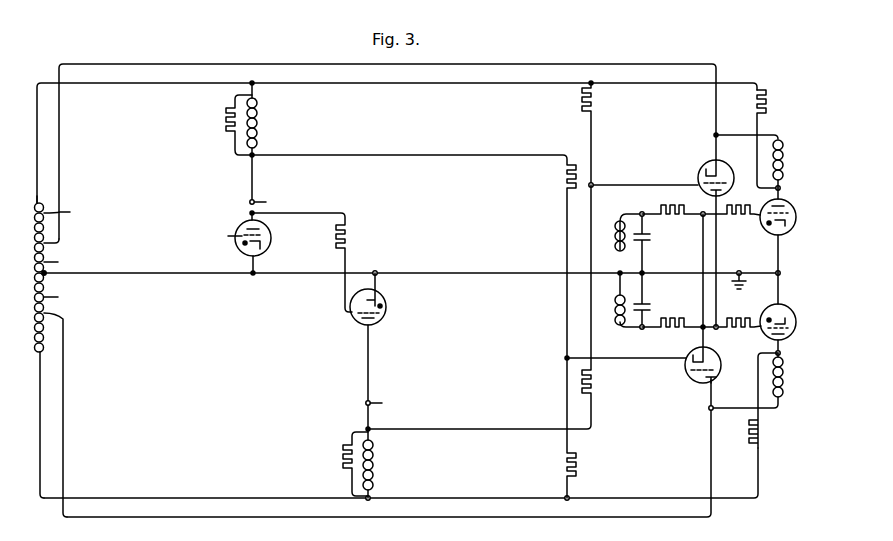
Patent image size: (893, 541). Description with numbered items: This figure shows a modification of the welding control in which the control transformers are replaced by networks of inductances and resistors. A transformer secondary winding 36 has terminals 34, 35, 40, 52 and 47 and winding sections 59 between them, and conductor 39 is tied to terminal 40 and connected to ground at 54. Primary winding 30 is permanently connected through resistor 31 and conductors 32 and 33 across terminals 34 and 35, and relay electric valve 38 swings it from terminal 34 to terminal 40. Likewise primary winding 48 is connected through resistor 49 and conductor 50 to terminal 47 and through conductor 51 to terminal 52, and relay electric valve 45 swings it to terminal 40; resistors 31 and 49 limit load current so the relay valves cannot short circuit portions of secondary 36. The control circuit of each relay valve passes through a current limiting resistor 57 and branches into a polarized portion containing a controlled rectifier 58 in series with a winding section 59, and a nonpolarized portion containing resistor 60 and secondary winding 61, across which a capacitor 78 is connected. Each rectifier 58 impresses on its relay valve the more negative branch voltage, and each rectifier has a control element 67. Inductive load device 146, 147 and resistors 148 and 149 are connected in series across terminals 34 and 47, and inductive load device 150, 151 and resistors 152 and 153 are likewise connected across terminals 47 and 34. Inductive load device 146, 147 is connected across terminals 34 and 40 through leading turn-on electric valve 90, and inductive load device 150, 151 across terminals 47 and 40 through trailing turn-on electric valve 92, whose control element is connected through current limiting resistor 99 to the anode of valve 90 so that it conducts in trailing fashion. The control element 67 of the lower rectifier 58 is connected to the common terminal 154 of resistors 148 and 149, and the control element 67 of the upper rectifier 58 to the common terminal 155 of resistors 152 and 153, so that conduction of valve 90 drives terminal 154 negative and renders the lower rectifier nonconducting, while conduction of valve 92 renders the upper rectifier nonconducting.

The conductor 33 is at (195, 63).
The conductor 32 is at (173, 84).
The terminal of secondary winding 34 is at (36, 201).
The secondary winding 36 is at (68, 213).
The terminal of secondary winding 35 is at (60, 246).
The winding sections 59 is at (63, 281).
The terminal of secondary winding 40 is at (48, 277).
The terminal of secondary winding 52 is at (63, 321).
The terminal of secondary winding 47 is at (38, 354).
The conductor 39 is at (477, 272).
The conductor 50 is at (191, 498).
The conductor 51 is at (192, 518).
The inductive load device 147 is at (228, 127).
The inductive load device 146 is at (259, 127).
The resistor 148 is at (560, 184).
The resistor 149 is at (560, 471).
The resistor 153 is at (599, 101).
The common terminal 155 is at (593, 186).
The resistor 152 is at (599, 378).
The common terminal 154 is at (560, 358).
The leading turn-on electric valve 90 is at (272, 240).
The current limiting resistor 99 is at (353, 243).
The trailing turn-on electric valve 92 is at (387, 307).
The inductive load device 151 is at (345, 468).
The inductive load device 150 is at (379, 466).
The resistor 31 is at (763, 92).
The primary winding 30 is at (786, 157).
The relay electric valve 38 is at (788, 202).
The relay electric valve 45 is at (788, 308).
The ground 54 is at (738, 291).
The primary winding 48 is at (786, 387).
The resistor 49 is at (766, 432).
The secondary winding 61 is at (613, 224).
The capacitor 78 is at (650, 244).
The resistor 60 is at (687, 226).
The current limiting resistor 57 is at (741, 227).
The unidirectional current conducting device 58 is at (703, 163).
The control element 67 is at (698, 182).